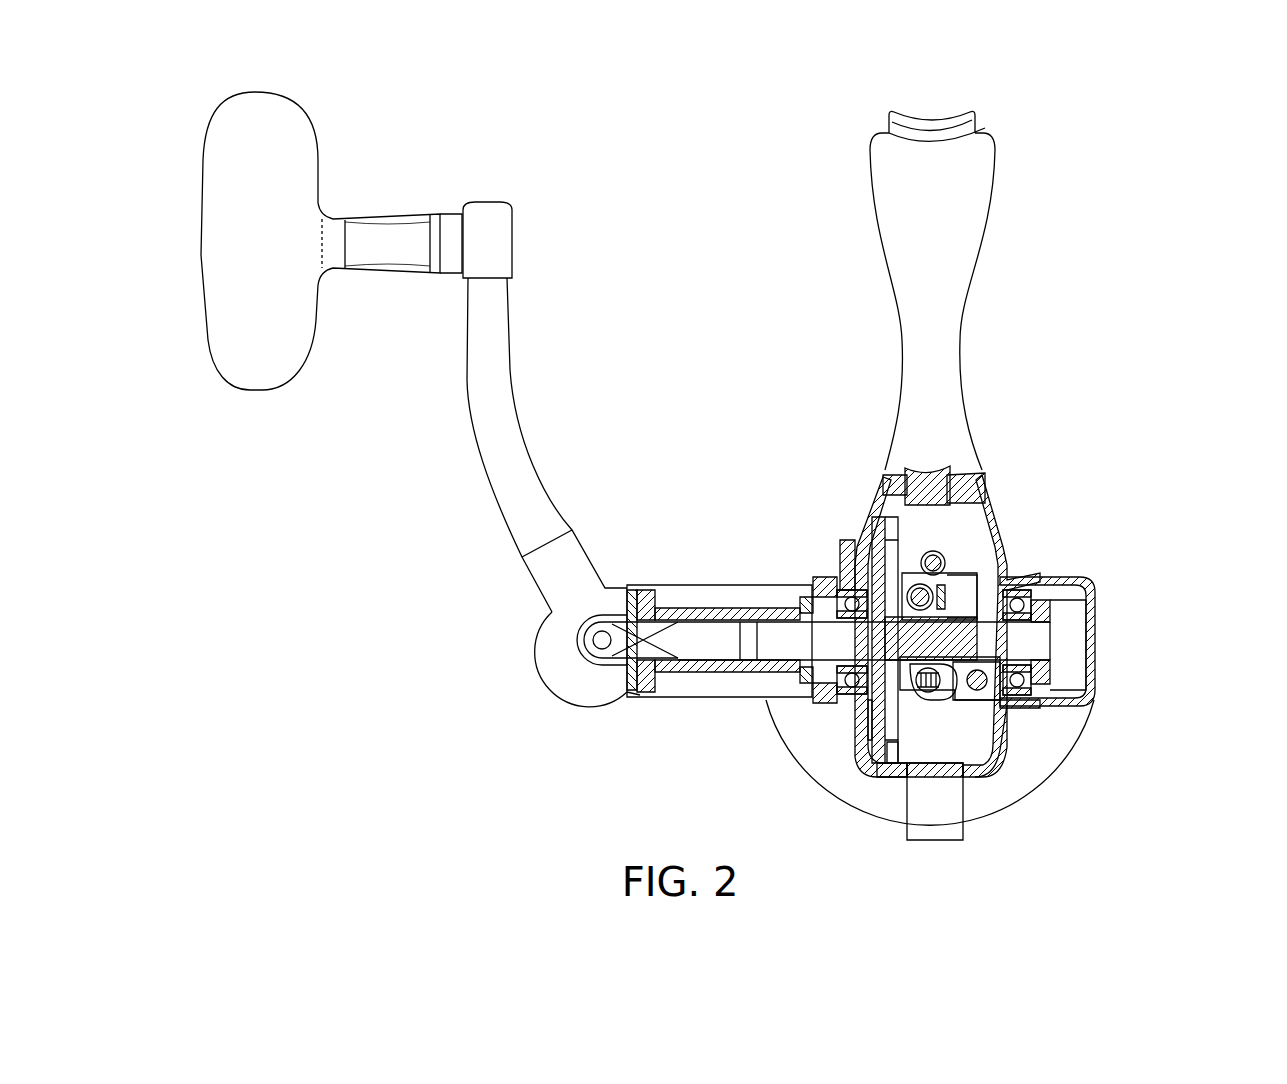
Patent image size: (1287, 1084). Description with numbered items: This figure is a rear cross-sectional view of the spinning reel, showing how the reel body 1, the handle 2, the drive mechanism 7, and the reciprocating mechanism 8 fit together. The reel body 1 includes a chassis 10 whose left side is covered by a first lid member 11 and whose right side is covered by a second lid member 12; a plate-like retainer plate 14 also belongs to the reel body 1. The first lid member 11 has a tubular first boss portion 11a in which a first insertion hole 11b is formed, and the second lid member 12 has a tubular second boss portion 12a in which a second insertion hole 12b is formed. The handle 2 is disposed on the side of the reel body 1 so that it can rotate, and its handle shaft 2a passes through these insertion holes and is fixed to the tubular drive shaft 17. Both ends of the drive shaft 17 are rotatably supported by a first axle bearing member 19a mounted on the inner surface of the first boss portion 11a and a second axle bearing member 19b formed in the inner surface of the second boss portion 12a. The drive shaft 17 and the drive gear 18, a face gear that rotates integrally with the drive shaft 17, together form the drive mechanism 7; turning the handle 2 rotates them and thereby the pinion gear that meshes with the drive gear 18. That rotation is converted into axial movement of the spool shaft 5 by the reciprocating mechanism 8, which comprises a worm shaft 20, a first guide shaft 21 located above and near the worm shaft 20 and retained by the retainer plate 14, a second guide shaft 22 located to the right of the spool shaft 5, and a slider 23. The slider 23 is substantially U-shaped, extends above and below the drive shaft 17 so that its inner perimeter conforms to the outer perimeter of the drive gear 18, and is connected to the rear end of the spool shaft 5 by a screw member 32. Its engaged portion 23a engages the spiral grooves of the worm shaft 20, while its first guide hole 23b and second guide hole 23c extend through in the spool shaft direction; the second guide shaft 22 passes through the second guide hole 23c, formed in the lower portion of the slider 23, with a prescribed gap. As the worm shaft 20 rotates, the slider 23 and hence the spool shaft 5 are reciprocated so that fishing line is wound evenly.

The reel body 1 is at (996, 400).
The handle 2 is at (525, 345).
The handle shaft 2a is at (710, 640).
The spool shaft 5 is at (918, 703).
The drive mechanism 7 is at (913, 732).
The reciprocating mechanism 8 is at (1008, 708).
The chassis 10 is at (915, 777).
The first lid member 11 is at (873, 485).
The first boss portion 11a is at (800, 708).
The first insertion hole 11b is at (805, 625).
The second lid member 12 is at (992, 490).
The second boss portion 12a is at (1090, 682).
The second insertion hole 12b is at (1090, 660).
The retainer plate 14 is at (830, 530).
The drive shaft 17 is at (860, 735).
The drive gear 18 is at (863, 763).
The first axle bearing member 19a is at (837, 610).
The second axle bearing member 19b is at (1090, 657).
The worm shaft 20 is at (822, 578).
The first guide shaft 21 is at (847, 547).
The second guide shaft 22 is at (1030, 710).
The slider 23 is at (995, 548).
The engaged portion 23a is at (1033, 570).
The first guide hole 23b is at (977, 562).
The second guide hole 23c is at (983, 700).
The screw member 32 is at (968, 745).